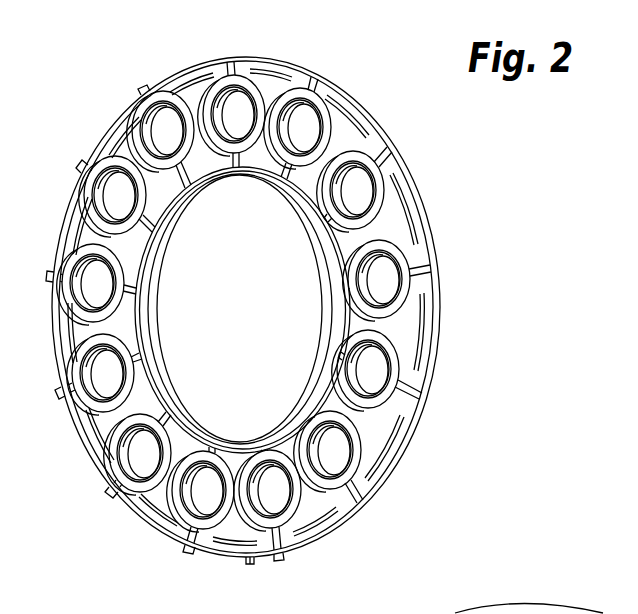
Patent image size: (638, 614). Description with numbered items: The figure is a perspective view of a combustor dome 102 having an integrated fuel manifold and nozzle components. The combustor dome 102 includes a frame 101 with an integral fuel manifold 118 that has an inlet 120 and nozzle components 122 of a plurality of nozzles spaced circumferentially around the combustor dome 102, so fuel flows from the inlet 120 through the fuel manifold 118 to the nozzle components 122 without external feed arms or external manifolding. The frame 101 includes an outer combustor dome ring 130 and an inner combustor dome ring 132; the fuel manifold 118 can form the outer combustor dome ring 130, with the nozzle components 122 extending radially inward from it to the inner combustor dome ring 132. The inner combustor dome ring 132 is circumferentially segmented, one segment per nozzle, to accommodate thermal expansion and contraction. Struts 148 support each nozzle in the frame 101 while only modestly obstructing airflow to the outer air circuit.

The frame 101 is at (84, 449).
The combustor dome 102 is at (502, 239).
The fuel manifold 118 is at (118, 118).
The inlet 120 is at (244, 566).
The nozzle components 122 is at (163, 84).
The outer combustor dome ring 130 is at (440, 303).
The inner combustor dome ring 132 is at (150, 370).
The struts 148 is at (205, 165).